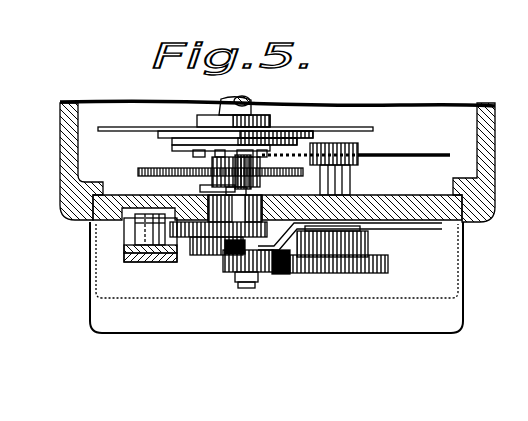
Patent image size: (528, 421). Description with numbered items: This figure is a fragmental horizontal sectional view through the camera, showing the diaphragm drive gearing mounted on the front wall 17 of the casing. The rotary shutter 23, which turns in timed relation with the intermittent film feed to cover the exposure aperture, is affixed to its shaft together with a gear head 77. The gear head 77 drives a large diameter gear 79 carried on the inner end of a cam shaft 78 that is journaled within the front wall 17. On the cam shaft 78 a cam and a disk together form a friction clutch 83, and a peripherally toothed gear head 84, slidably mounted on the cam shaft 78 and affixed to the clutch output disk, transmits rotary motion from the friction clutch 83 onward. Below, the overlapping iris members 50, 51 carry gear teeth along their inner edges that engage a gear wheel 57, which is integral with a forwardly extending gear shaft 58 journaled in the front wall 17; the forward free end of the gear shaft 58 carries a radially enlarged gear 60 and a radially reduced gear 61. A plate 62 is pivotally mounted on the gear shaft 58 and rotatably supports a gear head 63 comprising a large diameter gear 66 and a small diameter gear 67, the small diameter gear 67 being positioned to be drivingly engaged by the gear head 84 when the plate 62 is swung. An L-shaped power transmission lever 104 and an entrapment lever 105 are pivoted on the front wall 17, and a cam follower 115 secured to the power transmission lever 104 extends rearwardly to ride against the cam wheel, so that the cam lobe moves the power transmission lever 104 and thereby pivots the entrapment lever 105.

The front wall 17 is at (454, 222).
The rotary shutter 23 is at (326, 127).
The iris member 50 is at (302, 163).
The iris member 51 is at (434, 154).
The gear wheel 57 is at (357, 147).
The gear shaft 58 is at (350, 183).
The radially enlarged gear 60 is at (352, 273).
The radially reduced gear 61 is at (368, 244).
The plate 62 is at (410, 226).
The gear head 63 is at (224, 284).
The large diameter gear 66 is at (280, 262).
The small diameter gear 67 is at (204, 262).
The gear head 77 is at (258, 172).
The cam shaft 78 is at (220, 218).
The large diameter gear 79 is at (156, 168).
The friction clutch 83 is at (183, 250).
The gear head 84 is at (197, 256).
The power transmission lever 104 is at (125, 249).
The entrapment lever 105 is at (135, 262).
The cam follower 115 is at (137, 222).